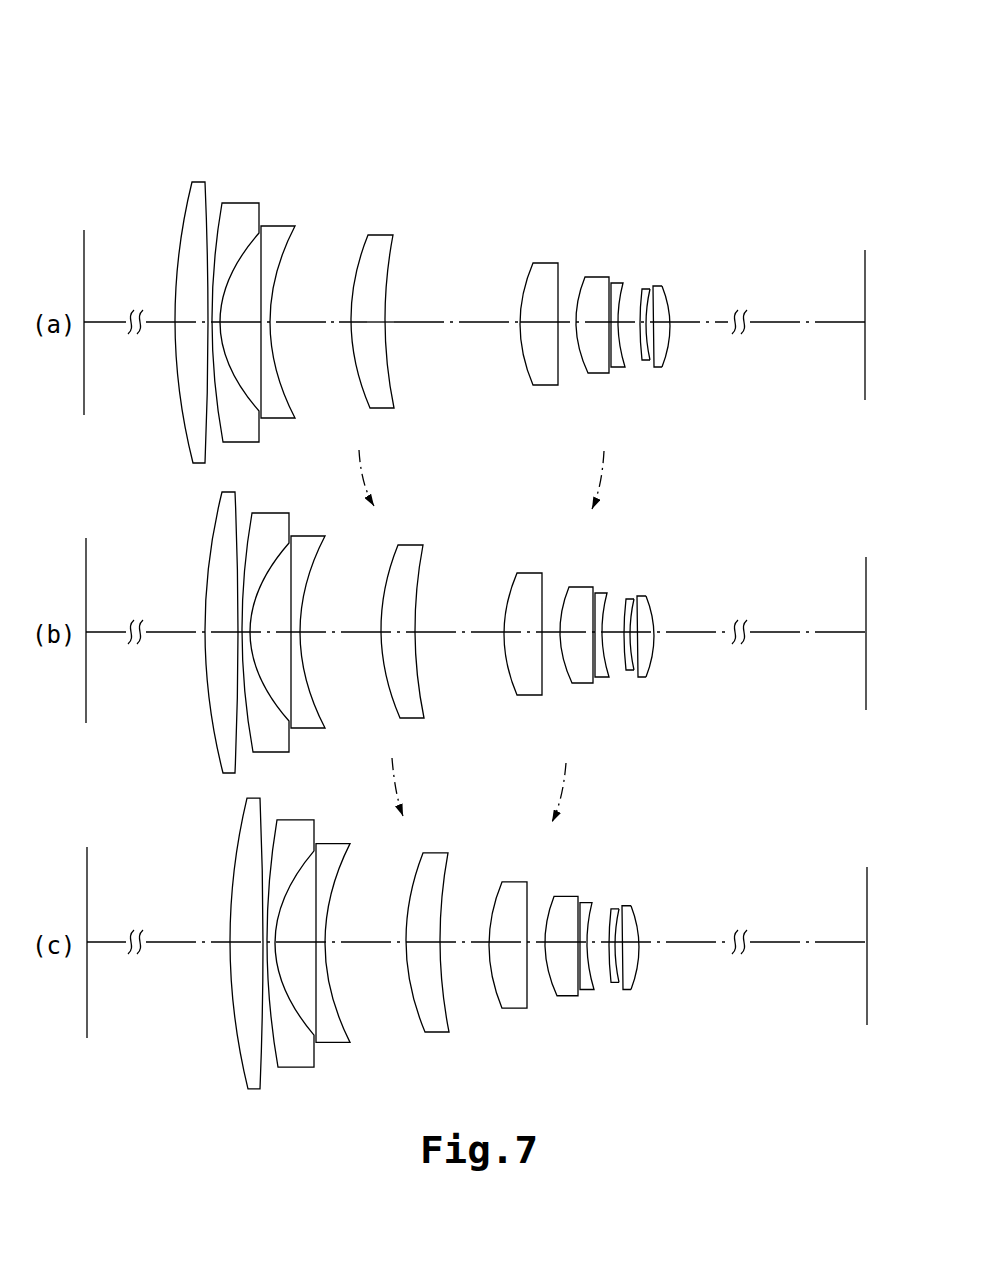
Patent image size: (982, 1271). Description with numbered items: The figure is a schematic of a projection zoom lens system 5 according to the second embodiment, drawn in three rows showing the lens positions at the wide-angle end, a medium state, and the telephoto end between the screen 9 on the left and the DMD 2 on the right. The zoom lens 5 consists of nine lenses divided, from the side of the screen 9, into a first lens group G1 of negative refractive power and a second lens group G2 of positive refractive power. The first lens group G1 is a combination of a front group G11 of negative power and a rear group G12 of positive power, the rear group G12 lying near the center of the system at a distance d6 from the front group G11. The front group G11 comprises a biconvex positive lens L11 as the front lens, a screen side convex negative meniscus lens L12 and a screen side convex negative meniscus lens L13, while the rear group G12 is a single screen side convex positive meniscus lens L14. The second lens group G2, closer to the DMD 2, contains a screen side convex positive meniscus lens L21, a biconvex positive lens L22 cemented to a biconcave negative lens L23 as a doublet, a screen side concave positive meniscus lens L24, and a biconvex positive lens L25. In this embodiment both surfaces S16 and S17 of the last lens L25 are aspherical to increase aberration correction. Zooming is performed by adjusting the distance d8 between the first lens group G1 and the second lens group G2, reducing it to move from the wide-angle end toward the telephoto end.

The projection zoom lens system 5 is at (173, 193).
The screen 9 is at (84, 250).
The DMD 2 is at (865, 287).
The first lens group G1 is at (258, 67).
The front group G11 is at (223, 115).
The rear group G12 is at (388, 115).
The biconvex positive lens L11 is at (200, 182).
The screen side convex negative meniscus lens L12 is at (238, 203).
The screen side convex negative meniscus lens L13 is at (275, 226).
The screen side convex positive meniscus lens L14 is at (378, 235).
The second lens group G2 is at (767, 139).
The screen side convex positive meniscus lens L21 is at (547, 263).
The biconvex positive lens L22 is at (598, 277).
The biconcave negative lens L23 is at (620, 283).
The screen side concave positive meniscus lens L24 is at (667, 302).
The biconvex positive lens L25 is at (716, 302).
The distance between front group and rear group d6 is at (313, 322).
The distance between second lens group and first lens group d8 is at (448, 322).
The aspherical surface of lens L25 S16 is at (648, 360).
The aspherical surface of lens L25 S17 is at (665, 366).